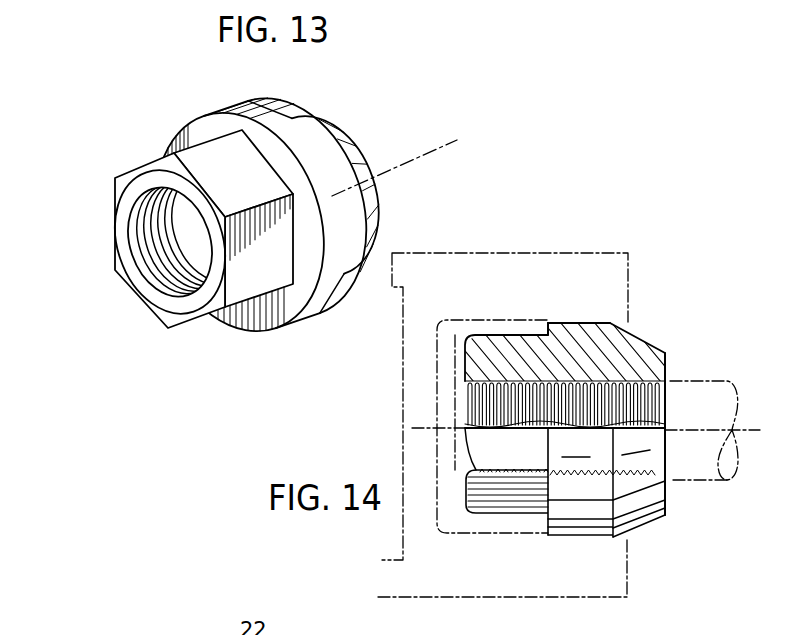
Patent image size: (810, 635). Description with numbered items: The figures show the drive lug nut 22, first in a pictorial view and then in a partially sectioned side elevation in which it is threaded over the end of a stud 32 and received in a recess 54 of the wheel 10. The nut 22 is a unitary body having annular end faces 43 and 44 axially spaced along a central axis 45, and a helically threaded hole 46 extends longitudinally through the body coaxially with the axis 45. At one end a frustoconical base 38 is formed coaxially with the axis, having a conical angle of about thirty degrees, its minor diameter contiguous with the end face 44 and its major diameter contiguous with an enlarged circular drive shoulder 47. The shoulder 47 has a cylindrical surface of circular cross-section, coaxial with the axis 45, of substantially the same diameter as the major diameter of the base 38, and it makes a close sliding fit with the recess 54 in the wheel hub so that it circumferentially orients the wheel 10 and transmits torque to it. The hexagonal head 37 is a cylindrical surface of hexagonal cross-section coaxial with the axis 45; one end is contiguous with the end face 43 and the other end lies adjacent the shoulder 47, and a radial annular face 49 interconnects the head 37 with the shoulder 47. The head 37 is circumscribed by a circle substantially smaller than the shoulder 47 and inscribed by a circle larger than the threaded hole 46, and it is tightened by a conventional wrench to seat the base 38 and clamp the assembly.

In FIG. 14, the wheel 10 is at (545, 253).
In FIG. 13, the drive lug nut 22 is at (300, 104).
In FIG. 14, the drive lug nut 22 is at (598, 322).
In FIG. 14, the stud 32 is at (693, 380).
In FIG. 13, the hexagonal head 37 is at (207, 315).
In FIG. 14, the hexagonal head 37 is at (498, 505).
In FIG. 13, the frustoconical base 38 is at (348, 143).
In FIG. 14, the frustoconical base 38 is at (645, 530).
In FIG. 13, the end face 43 is at (132, 272).
In FIG. 14, the end face 43 is at (465, 485).
In FIG. 13, the end face 44 is at (367, 153).
In FIG. 14, the end face 44 is at (665, 503).
In FIG. 13, the central axis 45 is at (437, 150).
In FIG. 14, the central axis 45 is at (748, 430).
In FIG. 13, the helically threaded hole 46 is at (143, 237).
In FIG. 14, the helically threaded hole 46 is at (477, 403).
In FIG. 13, the circular drive shoulder 47 is at (232, 105).
In FIG. 14, the circular drive shoulder 47 is at (573, 323).
In FIG. 13, the radial annular face 49 is at (193, 134).
In FIG. 14, the radial annular face 49 is at (535, 325).
In FIG. 14, the recess 54 is at (473, 321).